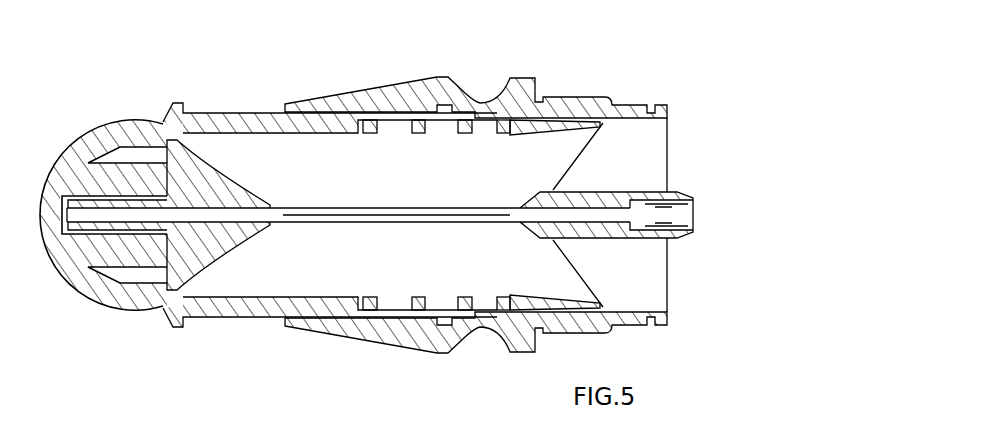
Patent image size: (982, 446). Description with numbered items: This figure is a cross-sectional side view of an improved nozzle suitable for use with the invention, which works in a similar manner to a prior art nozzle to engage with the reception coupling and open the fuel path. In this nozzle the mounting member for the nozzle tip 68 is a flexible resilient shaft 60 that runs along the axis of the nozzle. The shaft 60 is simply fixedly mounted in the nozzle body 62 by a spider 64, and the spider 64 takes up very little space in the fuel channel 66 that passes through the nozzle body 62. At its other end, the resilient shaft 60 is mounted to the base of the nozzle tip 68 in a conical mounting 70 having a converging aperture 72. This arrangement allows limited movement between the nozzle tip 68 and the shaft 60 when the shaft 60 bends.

The flexible resilient shaft 60 is at (368, 211).
The nozzle body 62 is at (584, 107).
The spider 64 is at (640, 157).
The fuel channel 66 is at (490, 262).
The nozzle tip 68 is at (80, 158).
The conical mounting 70 is at (205, 165).
The converging aperture 72 is at (272, 227).